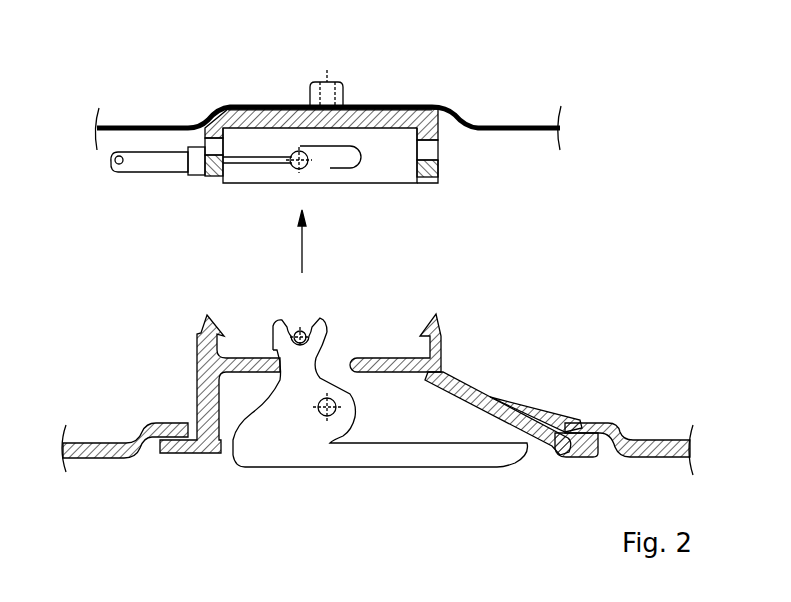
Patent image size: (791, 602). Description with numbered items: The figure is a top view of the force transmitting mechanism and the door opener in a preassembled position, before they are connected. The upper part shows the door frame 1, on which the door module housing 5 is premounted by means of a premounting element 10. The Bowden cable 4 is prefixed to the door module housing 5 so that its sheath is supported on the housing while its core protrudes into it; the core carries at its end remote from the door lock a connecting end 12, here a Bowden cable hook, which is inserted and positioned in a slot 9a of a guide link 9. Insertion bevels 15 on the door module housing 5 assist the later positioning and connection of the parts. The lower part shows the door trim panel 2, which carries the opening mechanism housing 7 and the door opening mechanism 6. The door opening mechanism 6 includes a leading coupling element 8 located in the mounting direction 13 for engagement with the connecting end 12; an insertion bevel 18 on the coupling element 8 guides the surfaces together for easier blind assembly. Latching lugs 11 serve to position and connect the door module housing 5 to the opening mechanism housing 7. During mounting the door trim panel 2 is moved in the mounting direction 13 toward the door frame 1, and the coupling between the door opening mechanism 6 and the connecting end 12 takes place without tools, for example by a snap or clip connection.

The door frame 1 is at (505, 128).
The door trim panel 2 is at (618, 436).
The Bowden cable 4 is at (145, 165).
The door module housing 5 is at (395, 114).
The door opening mechanism 6 is at (455, 460).
The opening mechanism housing 7 is at (492, 396).
The coupling element 8 is at (320, 328).
The guide link 9 is at (400, 177).
The slot 9a is at (345, 163).
The premounting element 10 is at (345, 97).
The latching lug 11 is at (207, 327).
The connecting end 12 is at (300, 150).
The mounting direction 13 is at (302, 243).
The insertion bevel 15 is at (214, 172).
The insertion bevel 18 is at (285, 326).